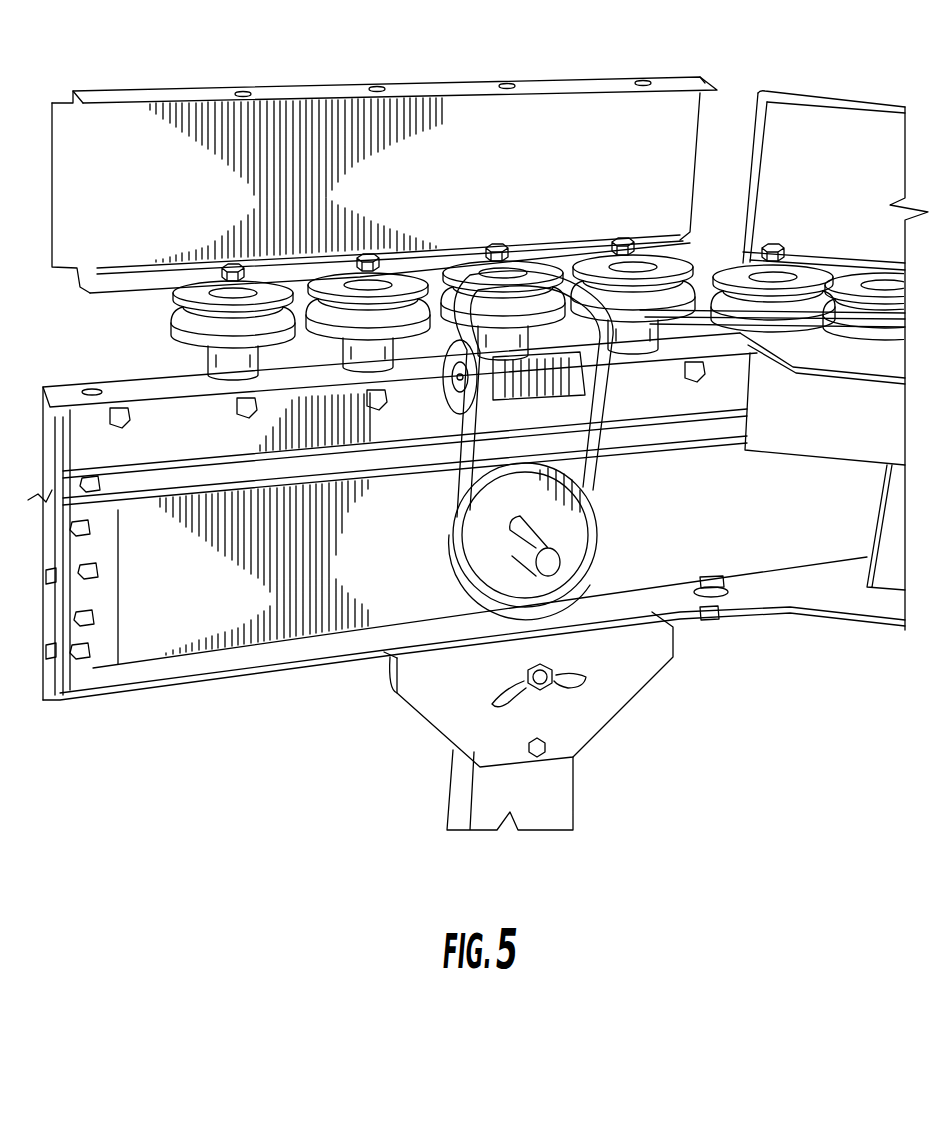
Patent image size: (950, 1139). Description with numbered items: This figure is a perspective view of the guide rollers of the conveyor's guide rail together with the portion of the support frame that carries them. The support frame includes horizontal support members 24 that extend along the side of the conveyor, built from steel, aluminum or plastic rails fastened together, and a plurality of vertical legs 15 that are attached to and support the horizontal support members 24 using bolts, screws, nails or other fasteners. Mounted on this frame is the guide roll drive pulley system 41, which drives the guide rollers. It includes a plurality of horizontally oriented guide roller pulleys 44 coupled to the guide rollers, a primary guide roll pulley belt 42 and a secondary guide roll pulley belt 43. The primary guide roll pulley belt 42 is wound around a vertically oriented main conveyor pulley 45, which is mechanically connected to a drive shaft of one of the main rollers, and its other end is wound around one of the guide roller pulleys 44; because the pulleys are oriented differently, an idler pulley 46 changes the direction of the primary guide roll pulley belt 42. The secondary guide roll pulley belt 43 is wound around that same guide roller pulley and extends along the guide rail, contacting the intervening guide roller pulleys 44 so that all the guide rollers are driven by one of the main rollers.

The vertical leg 15 is at (567, 793).
The horizontal support member 24 is at (200, 630).
The guide roll drive pulley system 41 is at (414, 582).
The primary guide roll pulley belt 42 is at (593, 472).
The secondary guide roll pulley belt 43 is at (827, 313).
The guide roller pulleys 44 is at (720, 263).
The main conveyor pulley 45 is at (570, 547).
The idler pulley 46 is at (450, 393).